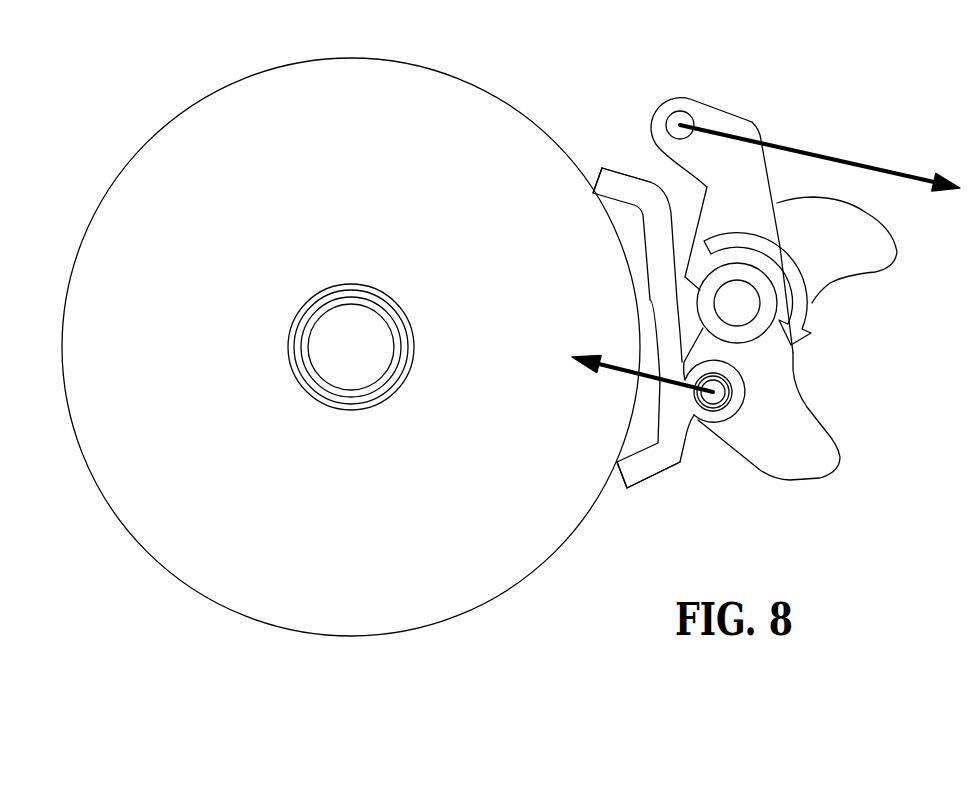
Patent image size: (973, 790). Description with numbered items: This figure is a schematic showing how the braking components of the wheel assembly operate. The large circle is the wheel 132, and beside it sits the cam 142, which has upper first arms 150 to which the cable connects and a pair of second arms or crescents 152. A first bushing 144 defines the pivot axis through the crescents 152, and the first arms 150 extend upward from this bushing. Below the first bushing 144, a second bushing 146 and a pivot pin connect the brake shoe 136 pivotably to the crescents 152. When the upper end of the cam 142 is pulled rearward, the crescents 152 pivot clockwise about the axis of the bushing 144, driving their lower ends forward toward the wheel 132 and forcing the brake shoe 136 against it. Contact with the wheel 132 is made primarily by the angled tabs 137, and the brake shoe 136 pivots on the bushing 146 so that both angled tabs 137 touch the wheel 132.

The wheel 132 is at (160, 128).
The brake shoe 136 is at (678, 463).
The angled tabs 137 is at (622, 170).
The cam 142 is at (712, 108).
The first bushing 144 is at (744, 342).
The second bushing 146 is at (730, 402).
The first arms 150 is at (755, 121).
The crescents 152 is at (853, 273).